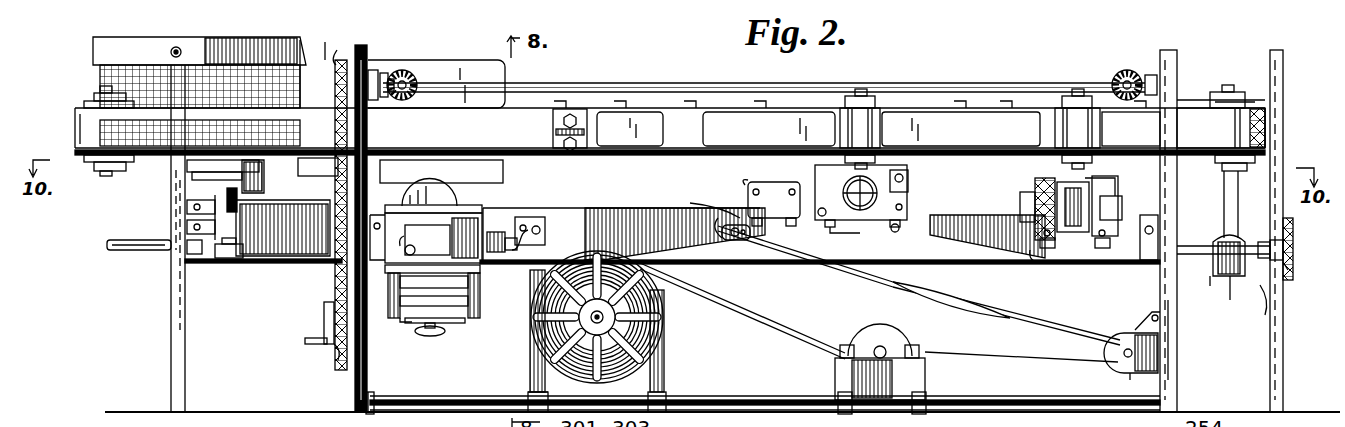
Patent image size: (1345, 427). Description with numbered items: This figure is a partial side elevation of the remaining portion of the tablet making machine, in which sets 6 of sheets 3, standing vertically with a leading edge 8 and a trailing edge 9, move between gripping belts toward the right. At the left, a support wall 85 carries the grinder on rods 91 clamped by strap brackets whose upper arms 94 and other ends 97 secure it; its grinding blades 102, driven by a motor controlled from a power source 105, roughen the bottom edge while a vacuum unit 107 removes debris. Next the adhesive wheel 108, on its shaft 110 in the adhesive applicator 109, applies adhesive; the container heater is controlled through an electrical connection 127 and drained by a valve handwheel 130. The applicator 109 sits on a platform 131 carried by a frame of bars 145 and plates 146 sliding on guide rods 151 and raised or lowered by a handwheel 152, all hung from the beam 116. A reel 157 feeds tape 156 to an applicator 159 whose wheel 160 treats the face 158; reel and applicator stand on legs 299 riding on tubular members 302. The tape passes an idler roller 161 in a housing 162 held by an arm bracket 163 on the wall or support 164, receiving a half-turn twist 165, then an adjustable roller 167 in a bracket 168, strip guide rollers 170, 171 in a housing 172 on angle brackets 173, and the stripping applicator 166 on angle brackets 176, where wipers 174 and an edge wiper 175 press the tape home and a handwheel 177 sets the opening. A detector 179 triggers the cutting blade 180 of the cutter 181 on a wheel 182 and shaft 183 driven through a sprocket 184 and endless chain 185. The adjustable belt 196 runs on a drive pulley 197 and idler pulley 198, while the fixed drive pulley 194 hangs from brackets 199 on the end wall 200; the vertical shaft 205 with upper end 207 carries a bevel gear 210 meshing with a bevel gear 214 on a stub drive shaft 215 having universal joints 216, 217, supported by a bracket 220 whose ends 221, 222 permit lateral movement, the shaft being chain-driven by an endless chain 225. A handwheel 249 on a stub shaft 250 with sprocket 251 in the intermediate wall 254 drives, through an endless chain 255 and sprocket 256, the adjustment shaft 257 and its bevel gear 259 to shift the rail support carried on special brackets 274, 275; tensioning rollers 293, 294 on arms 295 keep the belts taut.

The sheets 3 is at (450, 66).
The set 6 is at (430, 66).
The leading edge 8 is at (505, 171).
The trailing edge 9 is at (300, 166).
The support wall 85 is at (175, 370).
The rod 91 is at (172, 264).
The upper arm 94 is at (189, 213).
The other end 97 is at (268, 216).
The grinding blades 102 is at (248, 193).
The power source 105 is at (240, 262).
The vacuum unit 107 is at (187, 174).
The adhesive wheel 108 is at (670, 131).
The adhesive applicator 109 is at (484, 208).
The shaft 110 is at (434, 162).
The beam 116 is at (566, 222).
The electrical connection 127 is at (545, 236).
The handwheel 130 is at (419, 237).
The platform 131 is at (482, 298).
The bars 145 is at (470, 288).
The plates 146 is at (482, 322).
The guide rods 151 is at (410, 326).
The handwheel 152 is at (445, 336).
The tape 156 is at (812, 336).
The reel 157 is at (666, 362).
The face 158 is at (735, 311).
The applicator 159 is at (926, 373).
The wheel 160 is at (878, 350).
The idler roller 161 is at (1120, 344).
The housing 162 is at (1133, 364).
The arm bracket 163 is at (1142, 318).
The wall or support 164 is at (1166, 381).
The twist 165 is at (984, 283).
The stripping applicator 166 is at (878, 226).
The adjustable roller 167 is at (732, 213).
The bracket 168 is at (750, 234).
The strip guide roller 170 is at (760, 186).
The strip guide roller 171 is at (800, 180).
The housing 172 is at (755, 194).
The angle brackets 173 is at (700, 201).
The wipers 174 is at (908, 177).
The edge wiper 175 is at (908, 190).
The angle brackets 176 is at (908, 224).
The handwheel 177 is at (855, 220).
The detector 179 is at (1110, 200).
The cutting blade 180 is at (1062, 184).
The cutter 181 is at (1096, 230).
The wheel 182 is at (1046, 230).
The shaft 183 is at (1125, 203).
The sprocket 184 is at (1028, 194).
The endless chain 185 is at (1036, 262).
The fixed drive pulley 194 is at (1250, 100).
The belt 196 is at (915, 116).
The drive pulley 197 is at (1212, 96).
The idler pulley 198 is at (92, 100).
The brackets 199 is at (1262, 108).
The end wall 200 is at (1276, 52).
The vertical shaft 205 is at (1221, 130).
The upper end 207 is at (1228, 92).
The bevel gear 210 is at (1244, 196).
The bevel gear 214 is at (1220, 266).
The stub drive shaft 215 is at (1286, 258).
The universal joint 216 is at (1286, 234).
The universal joint 217 is at (1240, 278).
The bracket 220 is at (1224, 286).
The end 221 is at (1270, 300).
The end 222 is at (1224, 242).
The endless chain 225 is at (1290, 270).
The handwheel 249 is at (322, 348).
The stub shaft 250 is at (322, 316).
The sprocket 251 is at (340, 366).
The intermediate wall 254 is at (368, 384).
The endless chain 255 is at (372, 100).
The sprocket 256 is at (345, 65).
The adjustment shaft 257 is at (680, 83).
The bevel gear 259 is at (1147, 72).
The special bracket 274 is at (321, 215).
The special bracket 275 is at (1150, 245).
The tensioning roller 293 is at (860, 138).
The tensioning roller 294 is at (1085, 131).
The arms 295 is at (880, 104).
The legs 299 is at (530, 372).
The tubular members 302 is at (727, 398).